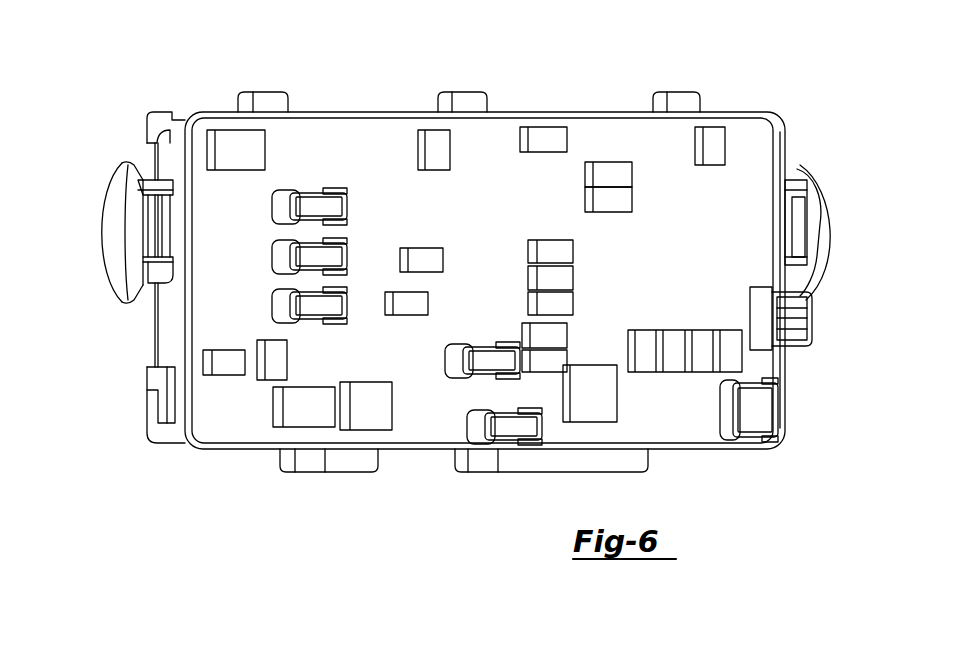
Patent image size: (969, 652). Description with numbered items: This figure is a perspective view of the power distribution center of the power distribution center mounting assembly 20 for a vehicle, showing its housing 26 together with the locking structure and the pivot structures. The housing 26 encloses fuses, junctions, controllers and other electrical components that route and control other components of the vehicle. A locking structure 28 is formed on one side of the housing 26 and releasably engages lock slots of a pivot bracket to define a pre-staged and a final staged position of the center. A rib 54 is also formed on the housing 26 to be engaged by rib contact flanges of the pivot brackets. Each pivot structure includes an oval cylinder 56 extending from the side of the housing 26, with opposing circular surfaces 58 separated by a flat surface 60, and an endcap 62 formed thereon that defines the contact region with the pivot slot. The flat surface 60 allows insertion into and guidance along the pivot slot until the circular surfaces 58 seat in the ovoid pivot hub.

The power distribution center mounting assembly 20 is at (580, 82).
The housing 26 is at (417, 450).
The locking structure 28 is at (812, 317).
The rib 54 is at (171, 117).
The oval cylinder 56 is at (144, 316).
The circular surfaces 58 is at (147, 187).
The flat surface 60 is at (157, 220).
The endcap 62 is at (102, 268).